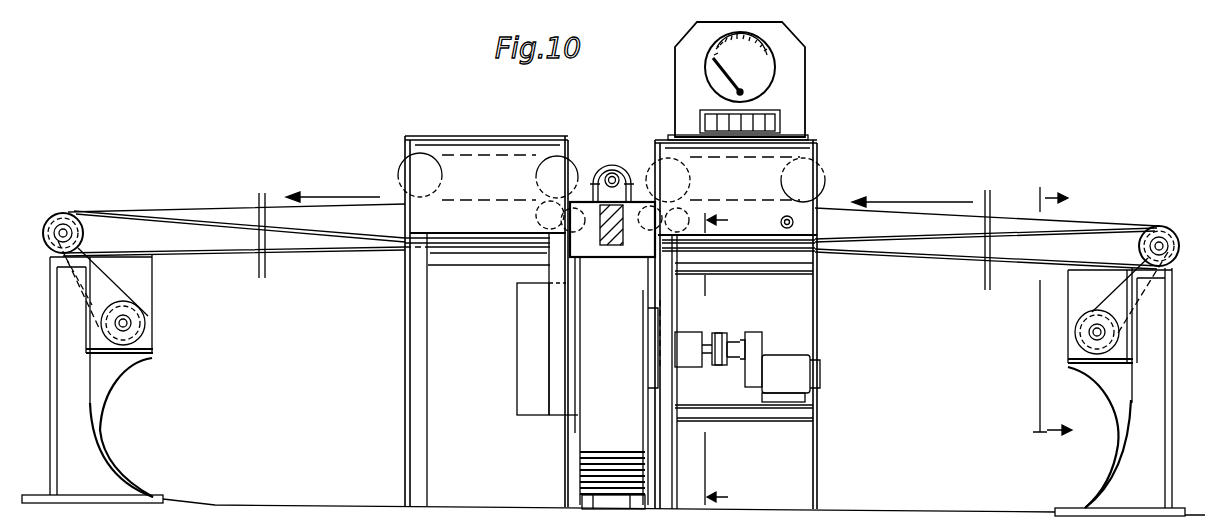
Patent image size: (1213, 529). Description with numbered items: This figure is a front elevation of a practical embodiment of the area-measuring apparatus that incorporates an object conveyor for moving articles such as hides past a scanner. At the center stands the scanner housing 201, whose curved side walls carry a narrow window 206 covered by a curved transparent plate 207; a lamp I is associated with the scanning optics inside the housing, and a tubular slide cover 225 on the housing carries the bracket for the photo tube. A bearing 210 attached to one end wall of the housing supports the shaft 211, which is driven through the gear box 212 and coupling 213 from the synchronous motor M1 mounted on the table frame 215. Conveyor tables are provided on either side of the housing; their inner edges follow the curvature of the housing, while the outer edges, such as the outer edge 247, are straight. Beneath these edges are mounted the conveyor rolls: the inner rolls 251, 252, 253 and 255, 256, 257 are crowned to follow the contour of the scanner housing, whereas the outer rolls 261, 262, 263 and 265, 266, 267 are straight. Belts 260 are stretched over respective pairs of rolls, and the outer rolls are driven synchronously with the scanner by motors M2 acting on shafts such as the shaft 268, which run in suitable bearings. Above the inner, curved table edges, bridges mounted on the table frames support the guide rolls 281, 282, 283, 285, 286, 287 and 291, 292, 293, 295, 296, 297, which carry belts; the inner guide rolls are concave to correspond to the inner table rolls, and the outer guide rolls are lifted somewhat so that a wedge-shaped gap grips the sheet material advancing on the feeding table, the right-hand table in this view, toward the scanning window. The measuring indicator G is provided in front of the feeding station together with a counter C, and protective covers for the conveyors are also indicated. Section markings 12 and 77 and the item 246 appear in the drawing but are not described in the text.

The outer conveyor roll 261 is at (58, 213).
The outer conveyor roll 262 is at (78, 167).
The outer conveyor roll 263 is at (70, 175).
The shaft for the outer rolls 268 is at (78, 212).
The outer edge of conveyor table 247 is at (90, 225).
The motor M2 is at (134, 321).
The guide roll 295 is at (400, 174).
The guide roll 296 is at (397, 160).
The guide roll 297 is at (400, 174).
The guide roll 291 is at (537, 180).
The guide roll 292 is at (482, 176).
The guide roll 293 is at (482, 191).
The inner conveyor roll 255 is at (542, 228).
The inner conveyor roll 256 is at (475, 296).
The inner conveyor roll 257 is at (475, 311).
The tubular slide cover 225 is at (526, 341).
The window 206 is at (612, 246).
The curved transparent plate 207 is at (590, 218).
The lamp I is at (617, 170).
The scanner housing 201 is at (617, 383).
The table frame 215 is at (808, 286).
The inner conveyor roll 251 is at (680, 213).
The inner conveyor roll 252 is at (722, 183).
The inner conveyor roll 253 is at (722, 197).
The guide roll 285 is at (818, 190).
The guide roll 286 is at (868, 172).
The guide roll 287 is at (868, 186).
The section line 12 is at (727, 358).
The bearing 210 is at (684, 333).
The shaft 211 is at (714, 332).
The gear box 212 is at (758, 332).
The coupling 213 is at (720, 368).
The synchronous motor M1 is at (785, 372).
The measuring indicator G is at (782, 75).
The counter C is at (782, 128).
The guide roll 281 is at (652, 165).
The guide roll 282 is at (653, 114).
The guide roll 283 is at (652, 125).
The belt 260 is at (920, 254).
The web strand 246 is at (1130, 236).
The section line 77 is at (1066, 313).
The outer conveyor roll 265 is at (1168, 226).
The outer conveyor roll 266 is at (1200, 183).
The outer conveyor roll 267 is at (1163, 230).